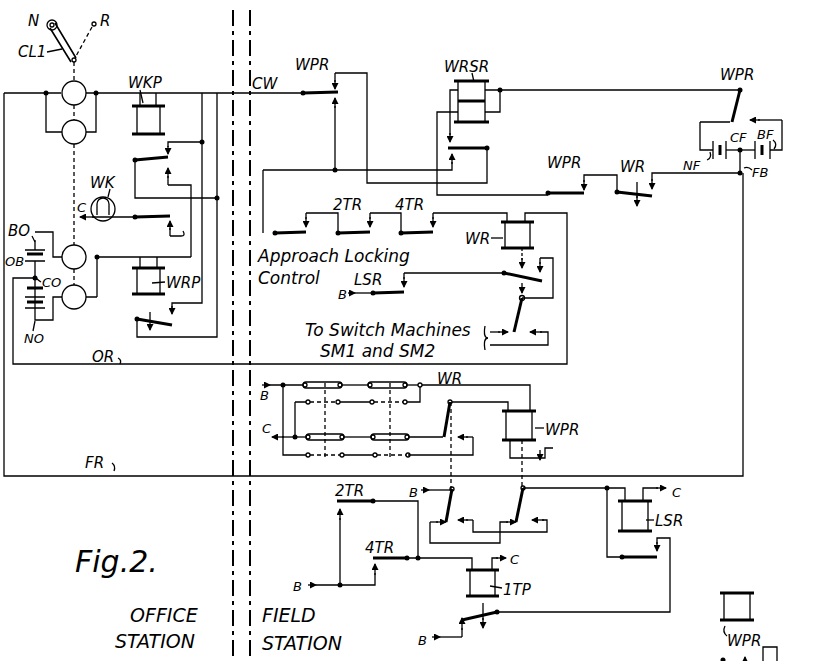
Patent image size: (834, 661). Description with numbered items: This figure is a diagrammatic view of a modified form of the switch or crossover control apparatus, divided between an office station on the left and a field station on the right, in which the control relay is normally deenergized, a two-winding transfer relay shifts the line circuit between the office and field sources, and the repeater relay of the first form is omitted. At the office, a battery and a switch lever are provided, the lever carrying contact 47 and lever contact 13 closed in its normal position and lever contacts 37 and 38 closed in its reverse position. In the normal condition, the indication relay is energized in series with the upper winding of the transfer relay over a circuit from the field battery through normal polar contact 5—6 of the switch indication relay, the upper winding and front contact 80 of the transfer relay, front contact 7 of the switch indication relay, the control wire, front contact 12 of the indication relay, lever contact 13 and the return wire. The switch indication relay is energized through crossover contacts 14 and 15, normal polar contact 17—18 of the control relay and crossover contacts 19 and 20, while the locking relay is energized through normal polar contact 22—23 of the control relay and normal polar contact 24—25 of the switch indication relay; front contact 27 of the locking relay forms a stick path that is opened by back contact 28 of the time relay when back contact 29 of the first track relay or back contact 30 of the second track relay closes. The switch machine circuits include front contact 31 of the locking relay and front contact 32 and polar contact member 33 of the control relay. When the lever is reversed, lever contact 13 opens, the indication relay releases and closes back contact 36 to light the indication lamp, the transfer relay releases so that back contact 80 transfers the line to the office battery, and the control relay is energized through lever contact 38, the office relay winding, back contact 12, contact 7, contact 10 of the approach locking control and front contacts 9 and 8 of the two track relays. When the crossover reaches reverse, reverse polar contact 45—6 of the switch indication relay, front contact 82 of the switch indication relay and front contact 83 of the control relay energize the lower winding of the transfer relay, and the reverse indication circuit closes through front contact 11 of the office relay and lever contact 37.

The normal polar contact 5 is at (728, 118).
The polar contact 6 is at (745, 104).
The front contact 7 is at (328, 88).
The front contact 8 is at (423, 231).
The front contact 9 is at (358, 231).
The approach locking control contact 10 is at (292, 231).
The front contact 11 is at (180, 322).
The front and back contact 12 is at (160, 158).
The lever contact 13 is at (64, 86).
The crossover contact 14 is at (328, 383).
The crossover contact 15 is at (398, 383).
The polar contact member 17 is at (455, 428).
The normal polar contact 18 is at (436, 418).
The crossover contact 19 is at (386, 429).
The crossover contact 20 is at (326, 429).
The normal polar contact 22 is at (452, 504).
The normal polar contact 23 is at (443, 518).
The normal polar contact 24 is at (512, 518).
The normal polar contact 25 is at (528, 512).
The front contact 27 is at (648, 558).
The back contact 28 is at (467, 619).
The back contact 29 is at (350, 505).
The back contact 30 is at (388, 560).
The front contact 31 is at (398, 295).
The front contact 32 is at (508, 270).
The polar contact member 33 is at (516, 300).
The back contact 36 is at (165, 223).
The lever contact 37 is at (66, 143).
The lever contact 38 is at (80, 307).
The reverse polar contact 45 is at (766, 126).
The lever contact 47 is at (84, 257).
The front and back contact 80 is at (482, 147).
The front contact 82 is at (582, 185).
The front contact 83 is at (651, 199).